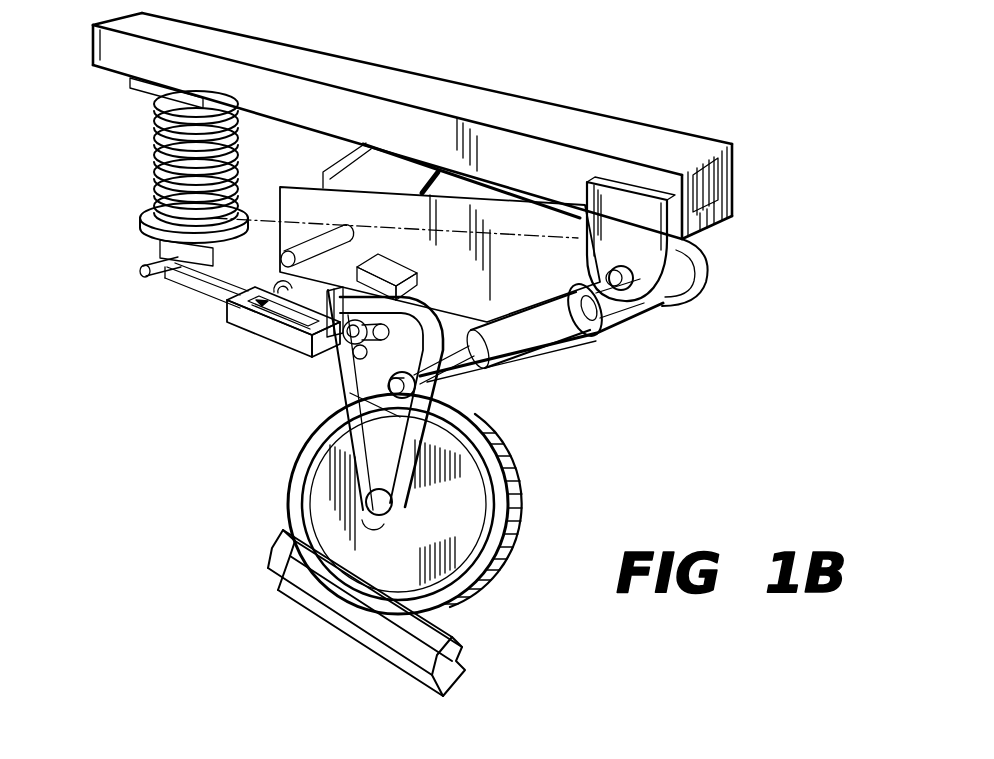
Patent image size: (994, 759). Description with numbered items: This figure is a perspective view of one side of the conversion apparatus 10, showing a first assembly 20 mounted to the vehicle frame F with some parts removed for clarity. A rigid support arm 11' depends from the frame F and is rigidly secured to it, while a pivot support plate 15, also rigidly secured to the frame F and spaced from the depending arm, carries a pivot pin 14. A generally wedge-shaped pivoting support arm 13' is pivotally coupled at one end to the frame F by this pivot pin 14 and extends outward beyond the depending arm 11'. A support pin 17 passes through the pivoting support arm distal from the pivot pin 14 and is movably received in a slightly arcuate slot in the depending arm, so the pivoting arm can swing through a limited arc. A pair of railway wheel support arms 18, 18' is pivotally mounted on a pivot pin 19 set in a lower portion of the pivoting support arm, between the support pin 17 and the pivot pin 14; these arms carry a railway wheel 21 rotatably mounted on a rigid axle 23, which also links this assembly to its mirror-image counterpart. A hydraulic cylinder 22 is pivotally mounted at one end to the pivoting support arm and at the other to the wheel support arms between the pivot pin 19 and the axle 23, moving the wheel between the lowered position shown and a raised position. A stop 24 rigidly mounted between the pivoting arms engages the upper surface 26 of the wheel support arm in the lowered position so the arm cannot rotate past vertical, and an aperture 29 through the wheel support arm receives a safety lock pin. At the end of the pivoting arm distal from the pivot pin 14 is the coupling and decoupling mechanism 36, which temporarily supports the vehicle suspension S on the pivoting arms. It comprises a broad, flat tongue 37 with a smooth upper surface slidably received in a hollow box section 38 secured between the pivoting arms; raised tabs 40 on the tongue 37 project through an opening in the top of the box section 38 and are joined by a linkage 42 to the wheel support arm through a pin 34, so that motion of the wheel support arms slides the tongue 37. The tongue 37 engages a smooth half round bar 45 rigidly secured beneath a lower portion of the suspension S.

The conversion apparatus 10 is at (102, 485).
The vehicle frame F is at (515, 100).
The vehicle suspension S is at (145, 153).
The rigid support arm 11' is at (406, 231).
The support pin 17 is at (300, 248).
The coupling and decoupling mechanism 36 is at (165, 314).
The half round bar 45 is at (148, 265).
The tongue 37 is at (178, 280).
The hollow box section 38 is at (250, 330).
The linkage 42 is at (282, 345).
The raised tabs 40 is at (294, 286).
The pin 34 is at (322, 345).
The aperture 29 is at (348, 352).
The stops 24 is at (395, 262).
The railway wheel support arm 18 is at (363, 418).
The upper surface 26 is at (432, 300).
The railway wheel support arm 18' is at (364, 400).
The pivot pin 19 is at (386, 384).
The axle 23 is at (380, 516).
The first assembly 20 is at (693, 460).
The railway wheel 21 is at (458, 600).
The pivot support plate 15 is at (632, 245).
The pivot pin 14 is at (610, 278).
The pivoting support arm 13' is at (720, 272).
The hydraulic cylinder 22 is at (530, 360).